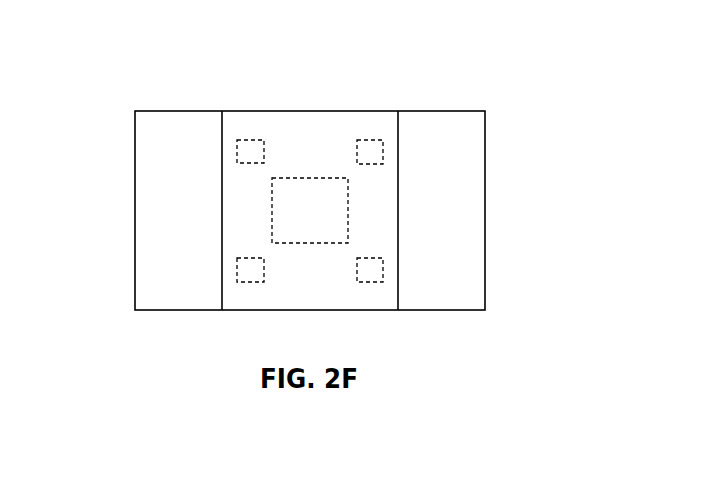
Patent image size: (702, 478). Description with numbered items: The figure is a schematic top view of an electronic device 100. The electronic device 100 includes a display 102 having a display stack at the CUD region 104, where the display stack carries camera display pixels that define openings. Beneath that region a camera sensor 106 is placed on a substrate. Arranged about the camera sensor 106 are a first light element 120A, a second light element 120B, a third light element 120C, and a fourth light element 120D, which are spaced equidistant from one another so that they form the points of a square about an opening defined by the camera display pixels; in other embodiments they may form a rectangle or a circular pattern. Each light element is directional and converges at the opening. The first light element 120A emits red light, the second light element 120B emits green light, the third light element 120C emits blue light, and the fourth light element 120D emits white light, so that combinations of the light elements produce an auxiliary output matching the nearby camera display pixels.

The electronic device 100 is at (500, 77).
The display 102 is at (442, 123).
The CUD region 104 is at (310, 125).
The camera sensor 106 is at (272, 212).
The first light element 120A is at (247, 140).
The second light element 120B is at (372, 140).
The third light element 120C is at (246, 282).
The fourth light element 120D is at (370, 282).